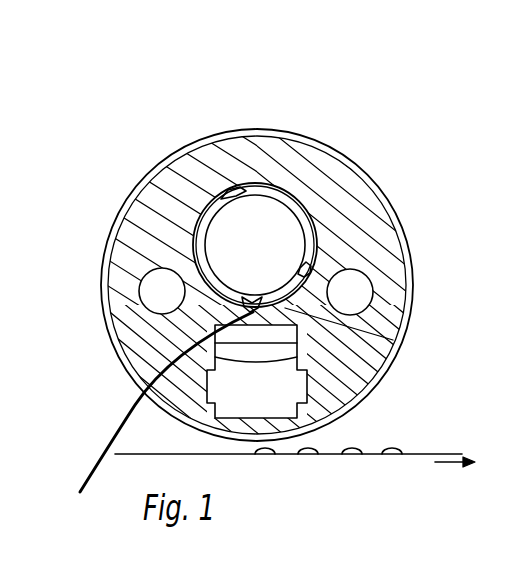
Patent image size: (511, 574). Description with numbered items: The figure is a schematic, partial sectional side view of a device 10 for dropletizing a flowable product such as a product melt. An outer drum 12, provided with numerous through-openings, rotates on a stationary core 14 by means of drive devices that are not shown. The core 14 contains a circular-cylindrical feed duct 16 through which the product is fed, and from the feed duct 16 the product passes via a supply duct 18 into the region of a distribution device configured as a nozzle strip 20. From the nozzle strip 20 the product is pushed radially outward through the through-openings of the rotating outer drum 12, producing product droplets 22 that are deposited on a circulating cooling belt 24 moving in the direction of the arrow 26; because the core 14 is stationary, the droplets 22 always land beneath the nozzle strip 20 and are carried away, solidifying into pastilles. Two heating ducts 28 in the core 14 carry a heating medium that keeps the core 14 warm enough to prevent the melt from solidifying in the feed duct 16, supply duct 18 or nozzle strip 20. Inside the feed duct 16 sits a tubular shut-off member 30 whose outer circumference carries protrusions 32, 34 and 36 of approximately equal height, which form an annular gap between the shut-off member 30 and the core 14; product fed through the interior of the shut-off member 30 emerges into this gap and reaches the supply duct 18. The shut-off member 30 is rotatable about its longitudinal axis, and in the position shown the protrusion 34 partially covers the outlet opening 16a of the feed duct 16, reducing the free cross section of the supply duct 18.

The device 10 is at (374, 85).
The outer drum 12 is at (353, 160).
The core 14 is at (350, 213).
The feed duct 16 is at (275, 190).
The outlet opening 16a is at (146, 431).
The supply duct 18 is at (390, 339).
The nozzle strip 20 is at (283, 387).
The product droplets 22 is at (277, 453).
The cooling belt 24 is at (422, 455).
The arrow 26 is at (447, 467).
The heating ducts 28 is at (150, 290).
The shut-off member 30 is at (205, 192).
The protrusion 32 is at (232, 190).
The protrusion 34 is at (250, 303).
The protrusion 36 is at (313, 267).